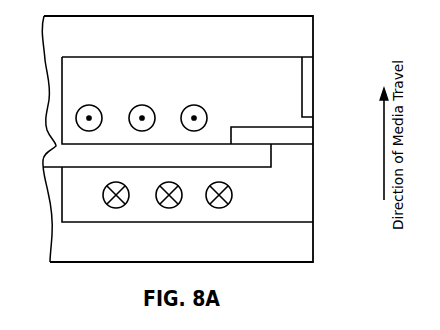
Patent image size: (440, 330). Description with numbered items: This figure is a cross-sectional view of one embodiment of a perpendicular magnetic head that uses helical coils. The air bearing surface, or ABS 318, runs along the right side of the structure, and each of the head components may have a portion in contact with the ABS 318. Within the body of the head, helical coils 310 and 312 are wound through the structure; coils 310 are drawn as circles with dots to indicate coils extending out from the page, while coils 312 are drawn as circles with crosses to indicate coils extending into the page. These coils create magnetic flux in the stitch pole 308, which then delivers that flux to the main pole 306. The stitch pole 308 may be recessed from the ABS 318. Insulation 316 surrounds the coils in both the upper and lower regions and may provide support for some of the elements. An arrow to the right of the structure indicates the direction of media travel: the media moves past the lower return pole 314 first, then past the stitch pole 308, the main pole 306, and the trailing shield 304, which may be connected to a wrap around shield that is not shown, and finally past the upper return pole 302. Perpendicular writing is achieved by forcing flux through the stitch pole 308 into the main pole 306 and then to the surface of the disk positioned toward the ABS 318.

The upper return pole 302 is at (242, 44).
The trailing shield 304 is at (313, 88).
The main pole 306 is at (313, 129).
The stitch pole 308 is at (203, 161).
The helical coils (extending out from the page) 310 is at (84, 105).
The helical coils (extending into the page) 312 is at (103, 197).
The lower return pole 314 is at (203, 252).
The insulation 316 is at (272, 98).
The ABS 318 is at (313, 29).